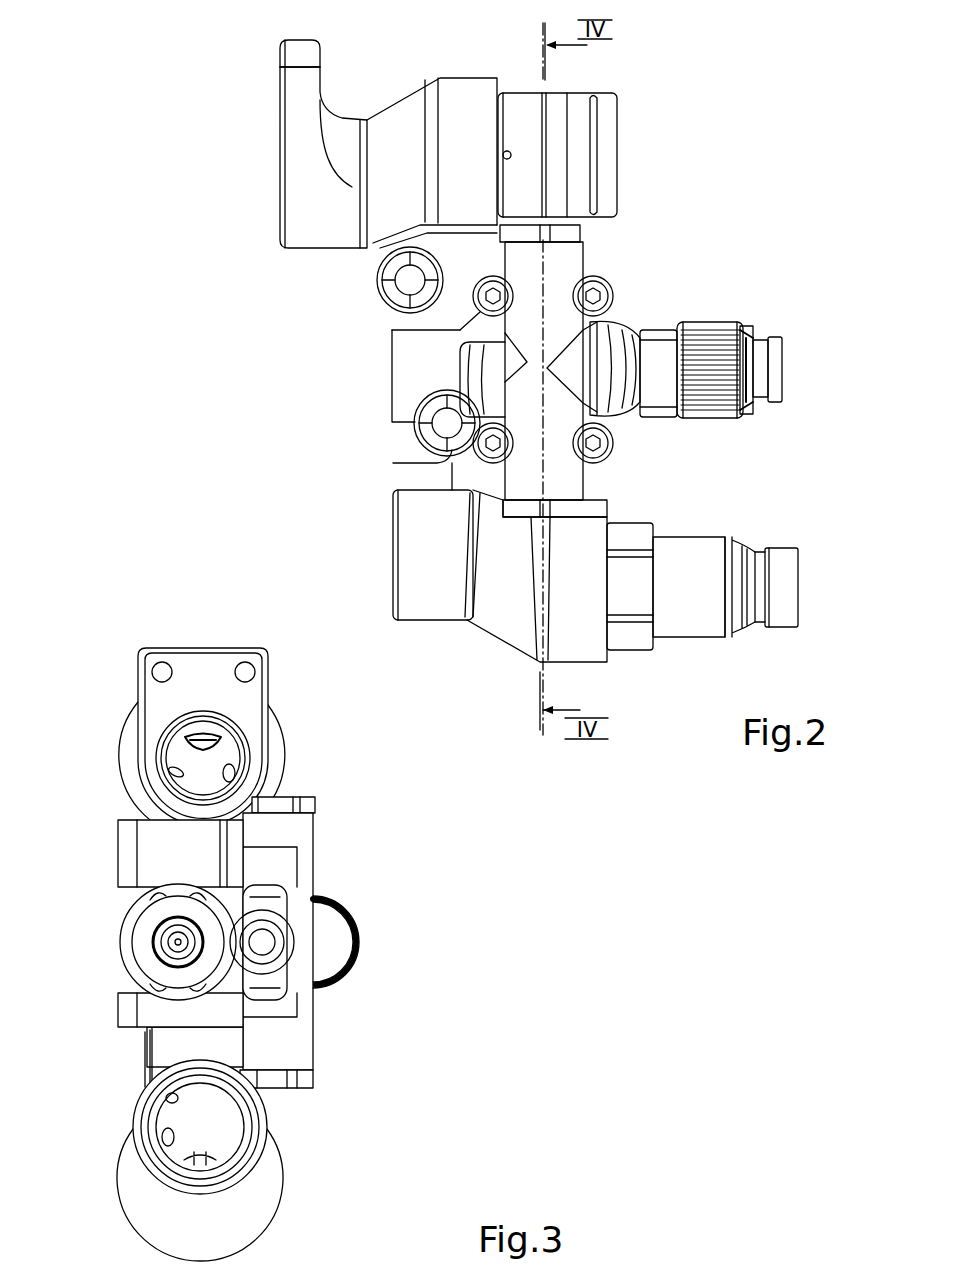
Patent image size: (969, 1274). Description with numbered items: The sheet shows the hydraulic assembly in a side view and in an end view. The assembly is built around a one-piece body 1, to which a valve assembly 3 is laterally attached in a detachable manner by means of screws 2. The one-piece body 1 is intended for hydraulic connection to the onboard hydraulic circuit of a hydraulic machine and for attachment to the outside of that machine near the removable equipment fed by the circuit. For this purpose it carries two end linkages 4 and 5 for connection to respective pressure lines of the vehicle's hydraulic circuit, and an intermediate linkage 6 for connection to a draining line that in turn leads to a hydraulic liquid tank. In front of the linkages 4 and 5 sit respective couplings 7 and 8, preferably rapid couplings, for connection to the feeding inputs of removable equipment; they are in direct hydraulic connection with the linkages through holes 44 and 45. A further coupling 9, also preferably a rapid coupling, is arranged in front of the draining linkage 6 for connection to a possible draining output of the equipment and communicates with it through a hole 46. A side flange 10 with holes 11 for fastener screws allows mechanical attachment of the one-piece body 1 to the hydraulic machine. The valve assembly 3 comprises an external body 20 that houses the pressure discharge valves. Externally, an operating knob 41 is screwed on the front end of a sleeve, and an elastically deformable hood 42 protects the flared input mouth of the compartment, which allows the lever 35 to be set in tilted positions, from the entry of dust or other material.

In FIG. 2, the one-piece body 1 is at (495, 633).
In FIG. 3, the one-piece body 1 is at (117, 1015).
In FIG. 2, the screws 2 is at (476, 303).
In FIG. 3, the screws 2 is at (300, 868).
In FIG. 2, the valve assembly 3 is at (587, 249).
In FIG. 3, the valve assembly 3 is at (317, 1060).
In FIG. 2, the end linkage 4 is at (280, 165).
In FIG. 3, the end linkage 4 is at (245, 720).
In FIG. 2, the end linkage 5 is at (413, 572).
In FIG. 3, the end linkage 5 is at (210, 1160).
In FIG. 2, the intermediate linkage 6 is at (403, 387).
In FIG. 3, the intermediate linkage 6 is at (147, 923).
In FIG. 2, the coupling 7 is at (608, 117).
In FIG. 2, the coupling 8 is at (787, 612).
In FIG. 2, the coupling 9 is at (780, 350).
In FIG. 2, the side flange 10 is at (302, 47).
In FIG. 3, the side flange 10 is at (197, 663).
In FIG. 3, the holes 11 is at (158, 665).
In FIG. 2, the external body 20 is at (563, 486).
In FIG. 3, the external body 20 is at (158, 1050).
In FIG. 2, the lever 35 is at (738, 422).
In FIG. 3, the lever 35 is at (360, 930).
In FIG. 2, the operating knob 41 is at (713, 322).
In FIG. 3, the operating knob 41 is at (357, 955).
In FIG. 2, the elastically deformable hood 42 is at (633, 330).
In FIG. 3, the hole 44 is at (237, 770).
In FIG. 3, the hole 45 is at (173, 1158).
In FIG. 3, the hole 46 is at (160, 923).